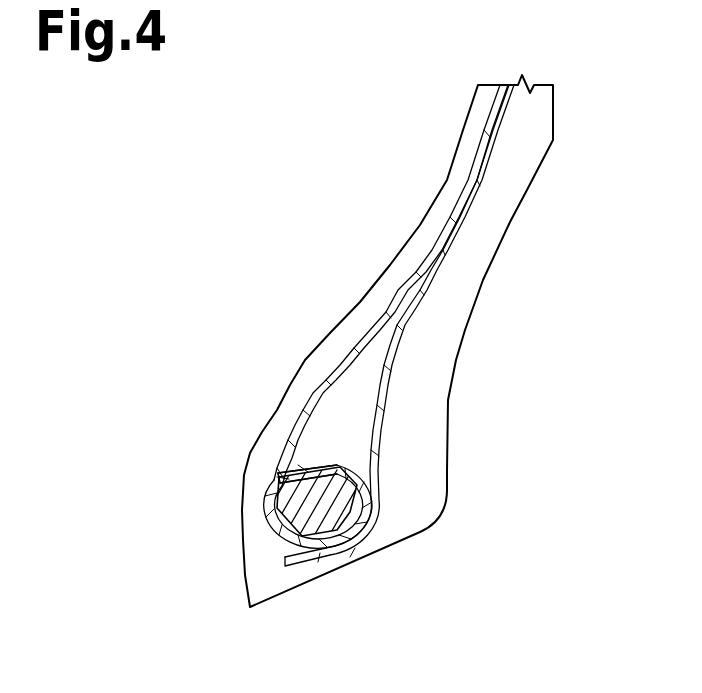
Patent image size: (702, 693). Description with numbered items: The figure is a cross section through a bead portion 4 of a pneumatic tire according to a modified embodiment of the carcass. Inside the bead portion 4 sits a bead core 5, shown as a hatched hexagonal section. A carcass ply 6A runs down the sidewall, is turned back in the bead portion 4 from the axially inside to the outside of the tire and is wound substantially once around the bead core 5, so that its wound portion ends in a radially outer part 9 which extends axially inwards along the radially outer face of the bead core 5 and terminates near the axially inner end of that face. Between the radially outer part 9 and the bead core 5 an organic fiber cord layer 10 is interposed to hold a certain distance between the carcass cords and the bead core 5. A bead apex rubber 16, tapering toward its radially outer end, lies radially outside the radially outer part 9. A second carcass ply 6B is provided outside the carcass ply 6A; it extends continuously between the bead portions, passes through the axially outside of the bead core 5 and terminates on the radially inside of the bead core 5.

The bead portion 4 is at (472, 437).
The bead core 5 is at (277, 500).
The carcass ply 6A is at (320, 385).
The carcass ply 6B is at (400, 353).
The radially outer part 9 is at (310, 460).
The organic fiber cord layer 10 is at (337, 470).
The bead apex rubber 16 is at (367, 363).